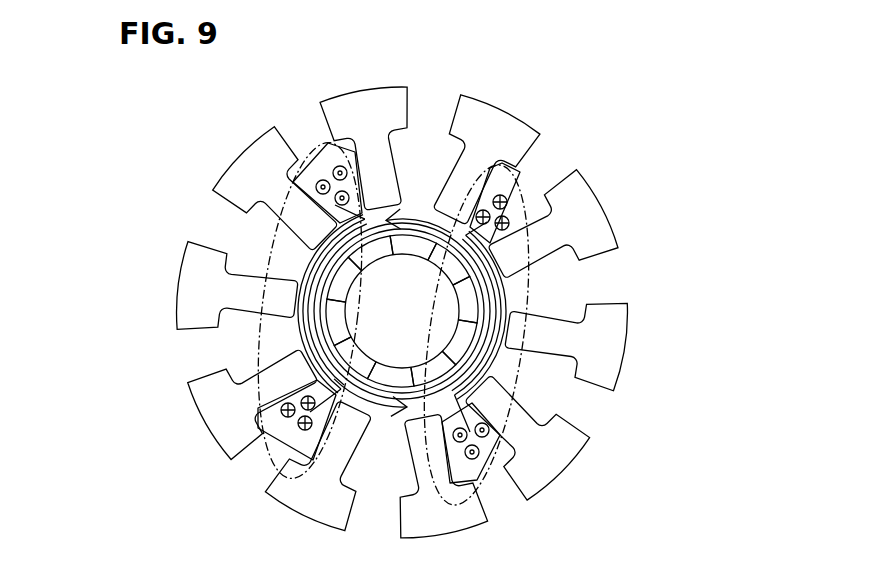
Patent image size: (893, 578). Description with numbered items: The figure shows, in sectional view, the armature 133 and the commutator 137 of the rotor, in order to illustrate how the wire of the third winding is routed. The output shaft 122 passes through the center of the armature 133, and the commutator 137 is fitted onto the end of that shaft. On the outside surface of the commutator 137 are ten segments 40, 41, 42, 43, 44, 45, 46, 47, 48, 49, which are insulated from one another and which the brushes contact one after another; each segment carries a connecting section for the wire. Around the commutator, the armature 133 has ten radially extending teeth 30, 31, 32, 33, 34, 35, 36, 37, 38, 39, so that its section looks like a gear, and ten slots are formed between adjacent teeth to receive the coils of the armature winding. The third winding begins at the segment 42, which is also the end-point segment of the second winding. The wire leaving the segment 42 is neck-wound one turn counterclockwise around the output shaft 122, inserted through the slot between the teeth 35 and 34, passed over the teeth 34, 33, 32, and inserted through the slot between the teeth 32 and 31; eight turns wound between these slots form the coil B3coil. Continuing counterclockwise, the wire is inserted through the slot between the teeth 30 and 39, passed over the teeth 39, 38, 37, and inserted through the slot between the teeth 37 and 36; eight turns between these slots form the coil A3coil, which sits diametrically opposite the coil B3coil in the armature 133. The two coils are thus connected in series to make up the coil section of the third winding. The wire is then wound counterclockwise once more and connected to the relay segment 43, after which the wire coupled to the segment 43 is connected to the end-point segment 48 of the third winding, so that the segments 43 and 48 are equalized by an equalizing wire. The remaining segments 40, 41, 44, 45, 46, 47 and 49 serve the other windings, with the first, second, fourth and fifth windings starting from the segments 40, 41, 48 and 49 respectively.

The tooth 30 is at (476, 163).
The tooth 31 is at (373, 143).
The tooth 32 is at (283, 197).
The tooth 33 is at (222, 292).
The tooth 34 is at (256, 394).
The tooth 35 is at (328, 468).
The tooth 36 is at (433, 484).
The tooth 37 is at (519, 430).
The tooth 38 is at (577, 339).
The tooth 39 is at (552, 235).
The segment 40 is at (412, 246).
The segment 41 is at (373, 253).
The segment 42 is at (344, 282).
The segment 43 is at (337, 321).
The segment 44 is at (356, 357).
The segment 45 is at (392, 375).
The segment 46 is at (432, 369).
The segment 47 is at (462, 341).
The segment 48 is at (471, 301).
The segment 49 is at (449, 265).
The output shaft 122 is at (419, 301).
The commutator 137 is at (422, 243).
The armature 133 is at (564, 103).
The coil A3 A3coil is at (536, 276).
The coil B3 B3coil is at (266, 241).